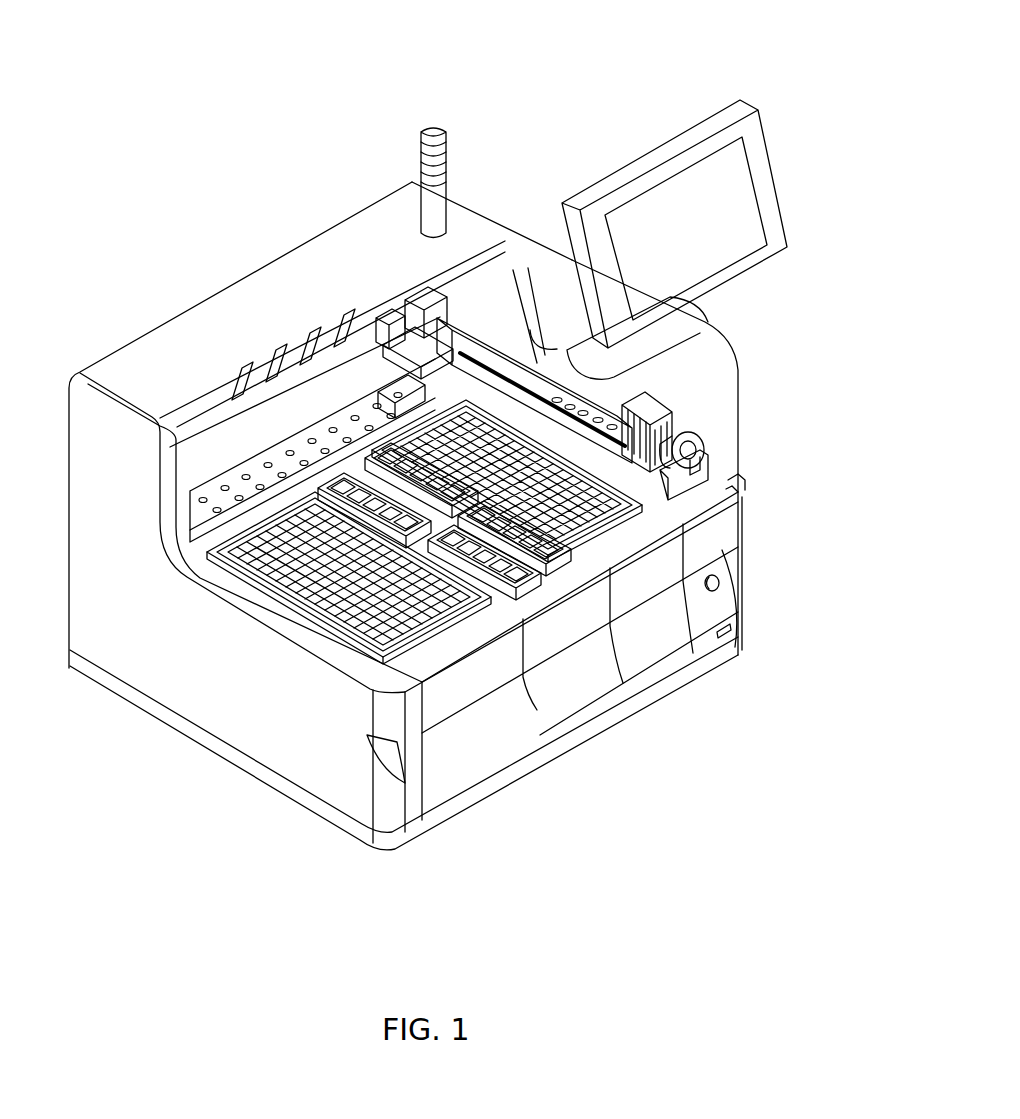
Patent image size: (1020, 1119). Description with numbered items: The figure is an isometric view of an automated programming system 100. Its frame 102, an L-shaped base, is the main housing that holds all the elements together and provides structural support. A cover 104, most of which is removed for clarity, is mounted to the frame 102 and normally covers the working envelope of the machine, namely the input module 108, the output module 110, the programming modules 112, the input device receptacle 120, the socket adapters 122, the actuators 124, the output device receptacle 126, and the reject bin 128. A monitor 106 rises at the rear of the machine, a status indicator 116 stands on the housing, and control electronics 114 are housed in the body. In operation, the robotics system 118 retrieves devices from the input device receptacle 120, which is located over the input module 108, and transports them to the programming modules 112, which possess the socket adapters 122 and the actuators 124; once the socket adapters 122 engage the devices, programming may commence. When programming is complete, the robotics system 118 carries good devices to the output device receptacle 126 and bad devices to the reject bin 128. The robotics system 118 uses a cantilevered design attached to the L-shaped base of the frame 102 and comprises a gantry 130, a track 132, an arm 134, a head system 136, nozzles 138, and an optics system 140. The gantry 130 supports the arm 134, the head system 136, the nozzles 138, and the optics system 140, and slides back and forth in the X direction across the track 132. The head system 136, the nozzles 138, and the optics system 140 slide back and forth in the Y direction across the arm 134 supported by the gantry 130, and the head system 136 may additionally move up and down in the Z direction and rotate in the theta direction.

The automated programming system 100 is at (165, 88).
The frame 102 is at (132, 575).
The cover 104 is at (680, 328).
The monitor 106 is at (672, 150).
The input module 108 is at (490, 763).
The output module 110 is at (657, 660).
The programming modules 112 is at (605, 697).
The control electronics 114 is at (718, 640).
The status indicator 116 is at (440, 130).
The robotics system 118 is at (467, 318).
The input device receptacle 120 is at (256, 578).
The socket adapters 122 is at (332, 484).
The actuators 124 is at (378, 455).
The output device receptacle 126 is at (438, 528).
The reject bin 128 is at (233, 470).
The gantry 130 is at (383, 318).
The track 132 is at (300, 513).
The arm 134 is at (700, 447).
The head system 136 is at (640, 430).
The nozzles 138 is at (665, 478).
The optics system 140 is at (735, 488).